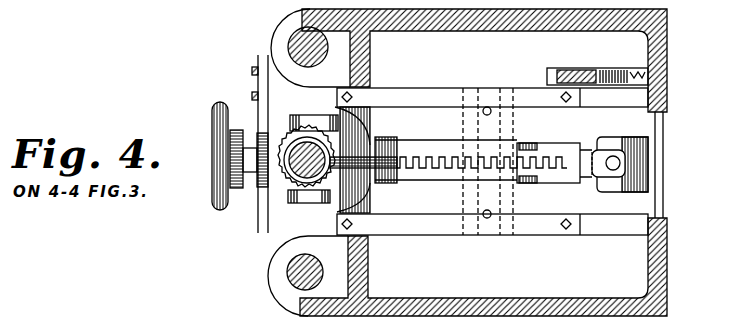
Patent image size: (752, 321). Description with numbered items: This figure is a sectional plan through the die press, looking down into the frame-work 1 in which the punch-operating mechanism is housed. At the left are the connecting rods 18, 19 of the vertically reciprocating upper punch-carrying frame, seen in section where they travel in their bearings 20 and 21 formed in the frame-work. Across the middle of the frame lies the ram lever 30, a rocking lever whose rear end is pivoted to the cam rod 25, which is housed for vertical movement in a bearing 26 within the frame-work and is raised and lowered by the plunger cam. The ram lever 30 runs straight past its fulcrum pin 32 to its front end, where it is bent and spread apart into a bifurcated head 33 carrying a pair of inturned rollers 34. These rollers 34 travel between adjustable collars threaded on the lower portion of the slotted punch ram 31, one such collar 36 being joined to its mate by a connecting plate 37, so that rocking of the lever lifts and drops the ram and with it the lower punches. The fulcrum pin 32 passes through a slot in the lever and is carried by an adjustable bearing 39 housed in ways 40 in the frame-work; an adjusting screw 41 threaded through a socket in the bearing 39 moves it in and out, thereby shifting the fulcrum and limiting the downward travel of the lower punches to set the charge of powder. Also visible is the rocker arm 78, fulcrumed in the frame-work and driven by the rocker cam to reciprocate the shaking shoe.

The frame-work 1 is at (511, 17).
The connecting rod 18 is at (290, 41).
The connecting rod 19 is at (286, 272).
The bearing 20 is at (283, 27).
The bearing 21 is at (285, 250).
The cam rod 25 is at (648, 145).
The bearing 26 is at (637, 198).
The ram lever 30 is at (435, 175).
The slotted punch ram 31 is at (285, 170).
The fulcrum pin 32 is at (497, 225).
The bifurcated head 33 is at (317, 213).
The inturned rollers 34 is at (323, 117).
The adjustable collar 36 is at (292, 135).
The connecting plate 37 is at (262, 128).
The adjustable bearing 39 is at (513, 200).
The ways 40 is at (410, 93).
The adjusting screw 41 is at (415, 155).
The rocker arm 78 is at (563, 67).